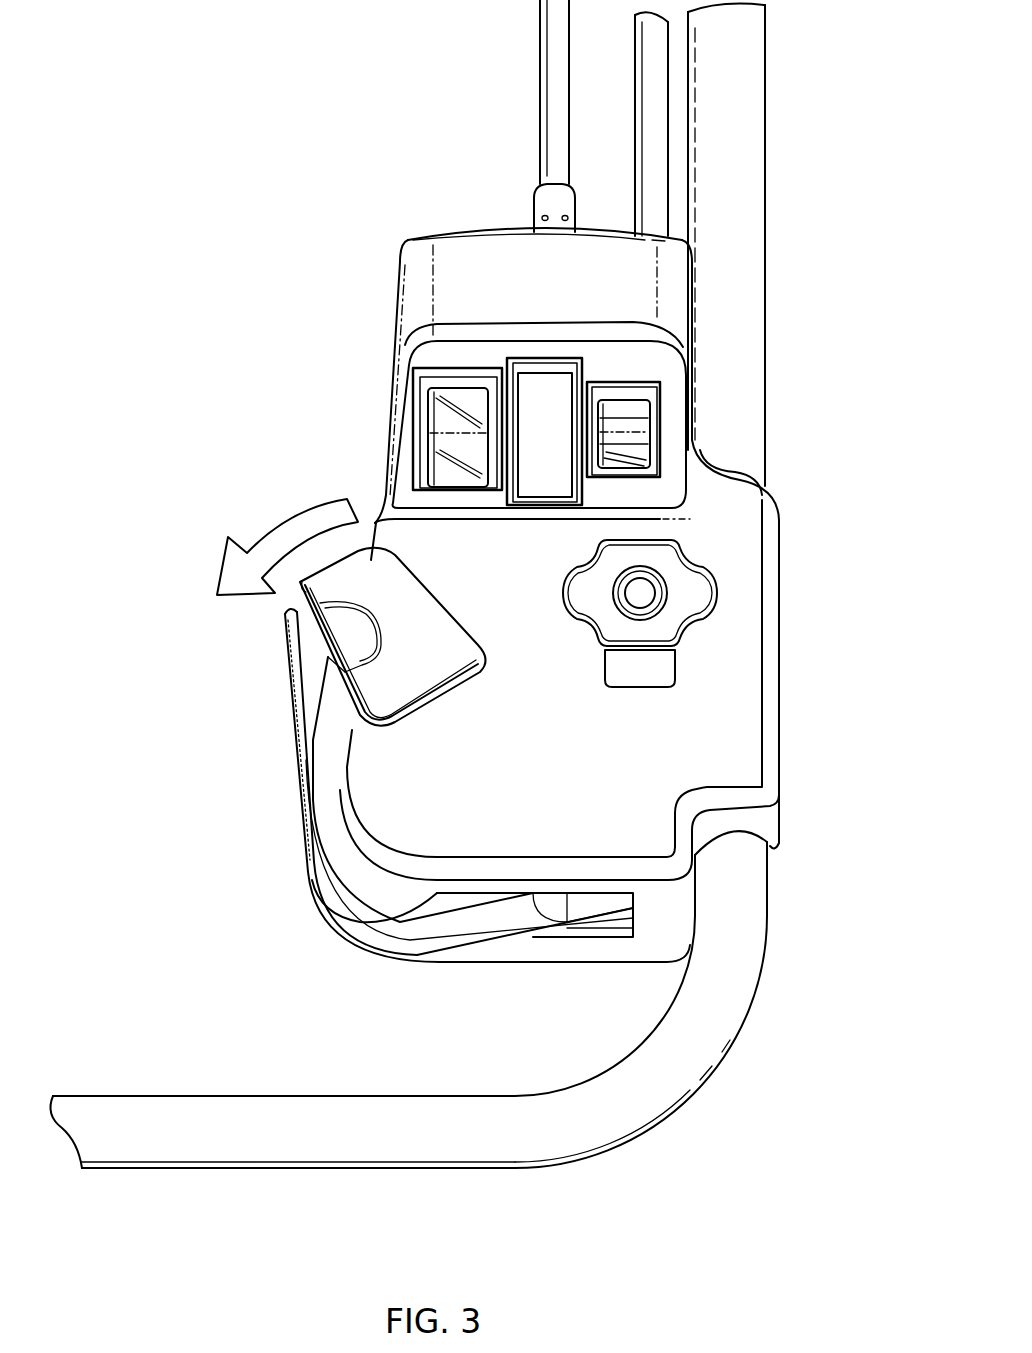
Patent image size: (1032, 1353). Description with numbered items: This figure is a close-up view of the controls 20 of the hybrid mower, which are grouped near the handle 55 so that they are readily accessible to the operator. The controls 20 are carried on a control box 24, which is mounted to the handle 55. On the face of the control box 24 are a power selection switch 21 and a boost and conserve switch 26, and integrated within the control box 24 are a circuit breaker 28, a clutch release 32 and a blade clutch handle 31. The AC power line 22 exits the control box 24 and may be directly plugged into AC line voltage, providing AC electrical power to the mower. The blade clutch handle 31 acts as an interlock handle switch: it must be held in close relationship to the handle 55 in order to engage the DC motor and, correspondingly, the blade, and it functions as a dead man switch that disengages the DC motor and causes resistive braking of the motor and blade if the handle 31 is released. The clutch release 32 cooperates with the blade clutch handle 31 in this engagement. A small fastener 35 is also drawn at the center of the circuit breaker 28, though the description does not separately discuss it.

The controls 20 is at (840, 668).
The power selection switch 21 is at (645, 428).
The AC power line 22 is at (548, 72).
The control box 24 is at (673, 290).
The boost and conserve switch 26 is at (440, 420).
The circuit breaker 28 is at (698, 613).
The blade clutch handle 31 is at (303, 730).
The clutch release 32 is at (307, 598).
The fastener 35 is at (640, 593).
The handle 55 is at (657, 1113).